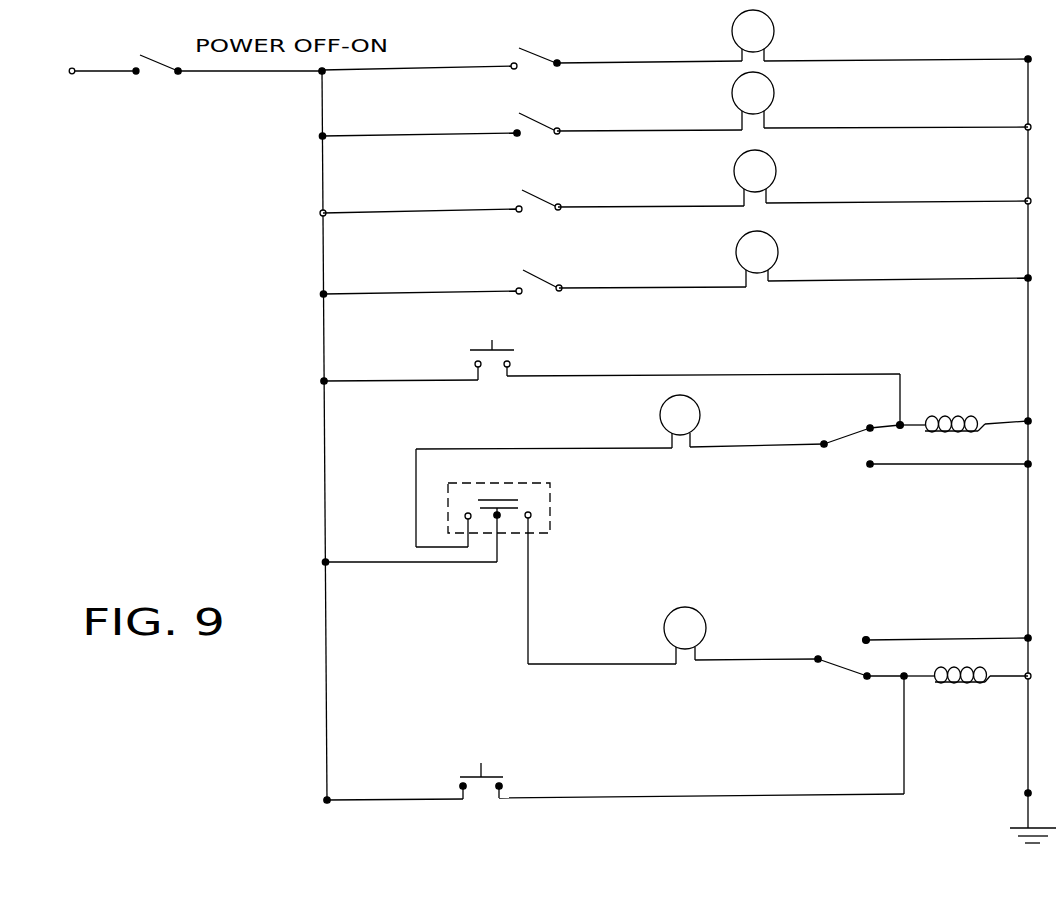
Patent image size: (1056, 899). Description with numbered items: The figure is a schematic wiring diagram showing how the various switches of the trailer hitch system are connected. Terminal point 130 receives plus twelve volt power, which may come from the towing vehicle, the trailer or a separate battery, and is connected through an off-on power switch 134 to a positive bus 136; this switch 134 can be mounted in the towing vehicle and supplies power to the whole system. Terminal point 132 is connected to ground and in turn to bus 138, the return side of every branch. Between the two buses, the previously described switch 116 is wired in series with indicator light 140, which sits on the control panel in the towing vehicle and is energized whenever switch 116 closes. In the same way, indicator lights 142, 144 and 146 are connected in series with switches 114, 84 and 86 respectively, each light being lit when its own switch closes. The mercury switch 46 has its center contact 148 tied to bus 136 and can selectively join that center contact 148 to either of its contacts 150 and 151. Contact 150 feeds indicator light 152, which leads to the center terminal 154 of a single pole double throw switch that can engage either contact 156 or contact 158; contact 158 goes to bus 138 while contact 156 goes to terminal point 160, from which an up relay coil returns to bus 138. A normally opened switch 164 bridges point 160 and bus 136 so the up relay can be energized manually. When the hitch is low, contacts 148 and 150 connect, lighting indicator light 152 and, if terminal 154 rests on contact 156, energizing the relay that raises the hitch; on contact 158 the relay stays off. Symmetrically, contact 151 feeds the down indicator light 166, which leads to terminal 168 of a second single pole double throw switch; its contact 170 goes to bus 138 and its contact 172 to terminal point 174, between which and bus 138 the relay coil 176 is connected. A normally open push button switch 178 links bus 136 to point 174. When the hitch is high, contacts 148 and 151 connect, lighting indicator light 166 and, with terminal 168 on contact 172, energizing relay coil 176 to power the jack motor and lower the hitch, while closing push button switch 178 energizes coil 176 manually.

The terminal point 130 is at (77, 80).
The off-on power switch 134 is at (157, 83).
The positive bus 136 is at (318, 262).
The bus 138 is at (1028, 548).
The terminal point 132 is at (1027, 793).
The switch 116 is at (502, 59).
The switch 114 is at (505, 126).
The switch 84 is at (507, 202).
The switch 86 is at (511, 283).
The indicator light 140 is at (731, 28).
The indicator light 142 is at (733, 93).
The indicator light 144 is at (734, 170).
The indicator light 146 is at (736, 252).
The normally opened switch 164 is at (478, 352).
The indicator light 152 is at (660, 413).
The center terminal 154 is at (828, 418).
The contact 156 is at (871, 424).
The terminal point 160 is at (903, 422).
The contact 158 is at (866, 466).
The mercury switch 46 is at (568, 526).
The contact 150 is at (463, 517).
The center contact 148 is at (495, 521).
The contact 151 is at (531, 521).
The down indicator light 166 is at (700, 614).
The terminal 168 is at (818, 655).
The contact 170 is at (879, 636).
The contact 172 is at (867, 680).
The terminal point 174 is at (918, 662).
The relay coil 176 is at (958, 684).
The normally open push button switch 178 is at (470, 776).